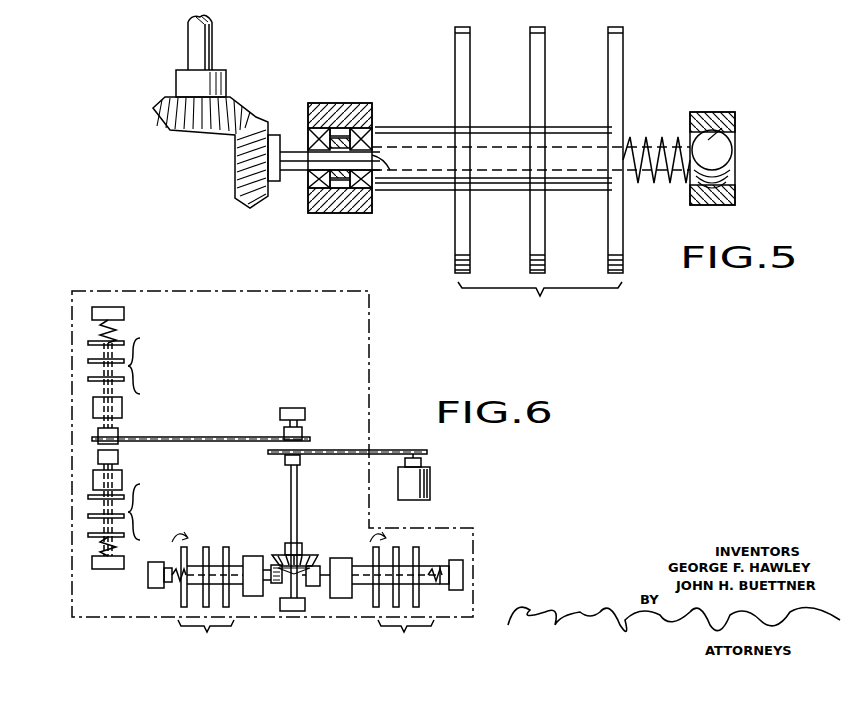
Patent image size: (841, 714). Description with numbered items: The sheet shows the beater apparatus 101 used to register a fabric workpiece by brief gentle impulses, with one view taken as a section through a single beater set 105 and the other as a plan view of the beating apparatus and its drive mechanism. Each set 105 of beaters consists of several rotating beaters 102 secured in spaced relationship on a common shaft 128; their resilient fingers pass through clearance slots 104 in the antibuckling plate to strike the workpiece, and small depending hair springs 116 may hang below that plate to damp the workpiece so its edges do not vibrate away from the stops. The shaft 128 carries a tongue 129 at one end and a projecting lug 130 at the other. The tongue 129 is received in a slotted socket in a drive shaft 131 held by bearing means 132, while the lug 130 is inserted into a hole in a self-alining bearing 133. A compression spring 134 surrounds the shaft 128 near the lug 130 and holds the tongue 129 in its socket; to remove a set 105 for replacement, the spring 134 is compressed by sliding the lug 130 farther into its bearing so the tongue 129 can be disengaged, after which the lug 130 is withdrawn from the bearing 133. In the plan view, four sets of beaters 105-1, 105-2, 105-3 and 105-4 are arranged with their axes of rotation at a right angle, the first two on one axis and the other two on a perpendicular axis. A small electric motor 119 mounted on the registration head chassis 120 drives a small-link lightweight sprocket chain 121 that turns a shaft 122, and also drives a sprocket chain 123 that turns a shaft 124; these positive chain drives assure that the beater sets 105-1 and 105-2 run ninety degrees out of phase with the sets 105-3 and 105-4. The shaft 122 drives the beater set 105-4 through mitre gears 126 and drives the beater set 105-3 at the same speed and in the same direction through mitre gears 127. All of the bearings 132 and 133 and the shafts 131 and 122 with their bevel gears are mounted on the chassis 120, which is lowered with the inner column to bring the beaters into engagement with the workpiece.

In FIG. 6, the beater apparatus 101 is at (174, 275).
In FIG. 5, the rotating beaters 102 is at (610, 28).
In FIG. 5, the clearance slots 104 is at (564, 6).
In FIG. 5, the sets of beaters 105 is at (540, 308).
In FIG. 6, the first beater set 105-1 is at (140, 366).
In FIG. 6, the second beater set 105-2 is at (140, 512).
In FIG. 6, the third beater set 105-3 is at (207, 632).
In FIG. 6, the fourth beater set 105-4 is at (404, 632).
In FIG. 5, the hair springs 116 is at (240, 0).
In FIG. 6, the electric motor 119 is at (430, 482).
In FIG. 6, the registration head chassis 120 is at (268, 290).
In FIG. 6, the sprocket chain 121 is at (412, 450).
In FIG. 5, the shaft 122 is at (188, 42).
In FIG. 6, the shaft 122 is at (298, 504).
In FIG. 6, the sprocket chain 123 is at (233, 437).
In FIG. 6, the shaft 124 is at (98, 456).
In FIG. 5, the mitre gears 126 is at (222, 120).
In FIG. 6, the mitre gears 126 is at (312, 556).
In FIG. 6, the mitre gears 127 is at (272, 565).
In FIG. 5, the common shaft 128 is at (438, 145).
In FIG. 5, the tongue 129 is at (380, 168).
In FIG. 5, the projecting lug 130 is at (738, 122).
In FIG. 5, the drive shaft 131 is at (292, 178).
In FIG. 5, the bearing means 132 is at (335, 103).
In FIG. 6, the bearing means 132 is at (341, 598).
In FIG. 5, the self-alining bearing 133 is at (714, 132).
In FIG. 6, the self-alining bearing 133 is at (124, 314).
In FIG. 5, the compression spring 134 is at (652, 178).